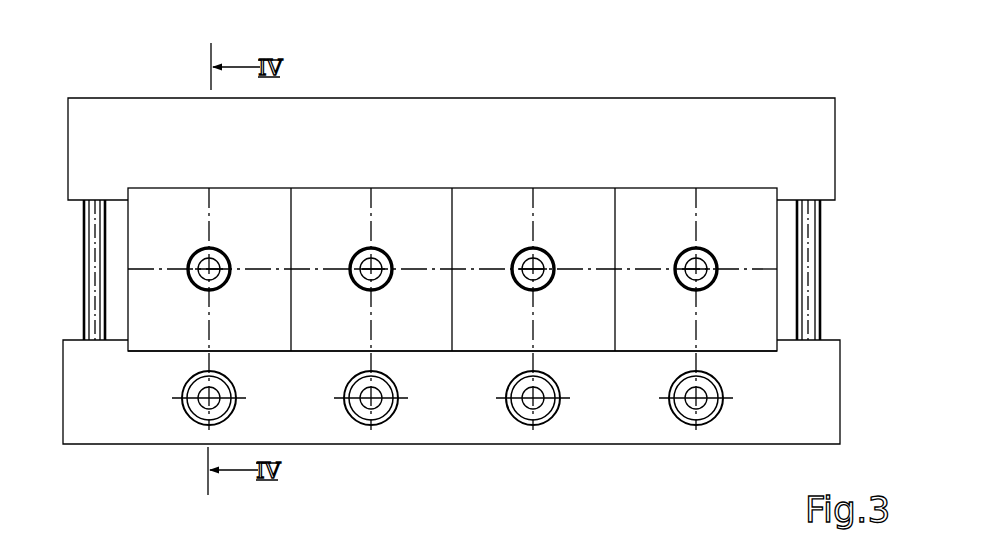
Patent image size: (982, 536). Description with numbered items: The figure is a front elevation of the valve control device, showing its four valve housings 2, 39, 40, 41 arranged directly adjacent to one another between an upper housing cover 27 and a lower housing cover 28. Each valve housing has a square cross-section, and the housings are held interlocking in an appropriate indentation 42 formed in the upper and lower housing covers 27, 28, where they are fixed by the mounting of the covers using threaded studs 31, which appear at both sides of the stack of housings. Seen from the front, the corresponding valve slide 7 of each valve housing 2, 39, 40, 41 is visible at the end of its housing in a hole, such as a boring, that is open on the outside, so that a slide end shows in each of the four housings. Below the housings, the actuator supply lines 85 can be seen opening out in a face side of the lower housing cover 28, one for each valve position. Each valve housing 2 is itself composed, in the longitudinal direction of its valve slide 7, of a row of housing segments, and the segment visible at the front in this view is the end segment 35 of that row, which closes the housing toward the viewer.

The valve housing 2 is at (157, 186).
The valve slide 7 is at (386, 256).
The upper housing cover 27 is at (655, 112).
The lower housing cover 28 is at (768, 425).
The threaded stud 31 is at (88, 266).
The end segment 35 is at (148, 340).
The valve housing 39 is at (356, 186).
The valve housing 40 is at (510, 186).
The valve housing 41 is at (735, 186).
The indentation 42 is at (234, 188).
The actuator supply line 85 is at (201, 407).